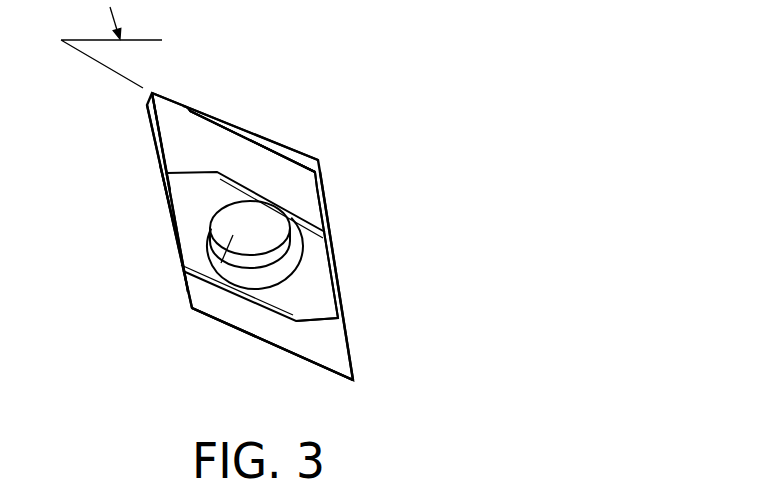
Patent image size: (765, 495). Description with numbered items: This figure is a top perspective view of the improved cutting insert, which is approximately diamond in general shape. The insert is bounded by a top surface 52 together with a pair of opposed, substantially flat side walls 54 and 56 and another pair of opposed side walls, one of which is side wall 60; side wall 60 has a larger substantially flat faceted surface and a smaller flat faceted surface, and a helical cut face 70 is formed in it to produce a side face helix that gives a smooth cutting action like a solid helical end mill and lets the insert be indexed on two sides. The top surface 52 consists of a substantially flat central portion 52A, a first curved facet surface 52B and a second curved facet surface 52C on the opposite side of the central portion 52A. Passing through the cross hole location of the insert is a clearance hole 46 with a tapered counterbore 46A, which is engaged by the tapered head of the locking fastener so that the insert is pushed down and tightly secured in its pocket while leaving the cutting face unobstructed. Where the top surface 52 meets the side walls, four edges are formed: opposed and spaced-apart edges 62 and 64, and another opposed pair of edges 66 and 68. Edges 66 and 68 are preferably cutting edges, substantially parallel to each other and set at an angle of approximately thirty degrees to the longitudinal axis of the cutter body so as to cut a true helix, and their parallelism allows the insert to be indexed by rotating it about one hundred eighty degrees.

The clearance hole 46 is at (190, 294).
The tapered counterbore 46A is at (285, 283).
The top surface 52 is at (188, 234).
The central portion 52A is at (317, 306).
The first curved facet surface 52B is at (175, 140).
The second curved facet surface 52C is at (313, 350).
The side wall 54 is at (152, 183).
The side wall 56 is at (340, 247).
The side wall 60 is at (265, 126).
The edge 62 is at (168, 208).
The edge 64 is at (317, 210).
The cutting edge 66 is at (208, 118).
The cutting edge 68 is at (247, 335).
The helical cut face 70 is at (297, 160).